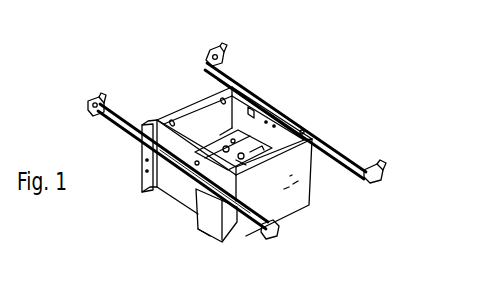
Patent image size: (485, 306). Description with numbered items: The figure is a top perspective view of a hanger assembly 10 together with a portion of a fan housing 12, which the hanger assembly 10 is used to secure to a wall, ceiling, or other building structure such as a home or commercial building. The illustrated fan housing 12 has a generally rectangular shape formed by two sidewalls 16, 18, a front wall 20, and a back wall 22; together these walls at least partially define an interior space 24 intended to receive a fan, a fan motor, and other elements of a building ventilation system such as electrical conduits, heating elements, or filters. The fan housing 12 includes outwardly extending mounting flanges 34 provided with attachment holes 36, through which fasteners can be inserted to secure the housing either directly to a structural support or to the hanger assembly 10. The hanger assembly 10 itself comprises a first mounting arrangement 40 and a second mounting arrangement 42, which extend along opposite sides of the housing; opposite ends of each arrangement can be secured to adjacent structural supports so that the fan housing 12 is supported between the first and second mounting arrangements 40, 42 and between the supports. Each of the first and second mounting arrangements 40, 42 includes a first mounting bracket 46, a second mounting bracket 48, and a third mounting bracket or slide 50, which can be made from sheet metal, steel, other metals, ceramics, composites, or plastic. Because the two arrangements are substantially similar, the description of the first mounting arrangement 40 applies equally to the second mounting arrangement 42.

The hanger assembly 10 is at (125, 21).
The fan housing 12 is at (234, 226).
The sidewall 16 is at (171, 160).
The sidewall 18 is at (258, 122).
The front wall 20 is at (298, 197).
The back wall 22 is at (197, 117).
The interior space 24 is at (304, 101).
The mounting flange 34 is at (141, 161).
The attachment hole 36 is at (147, 128).
The first mounting arrangement 40 is at (227, 42).
The second mounting arrangement 42 is at (92, 90).
The first mounting bracket 46 is at (118, 130).
The second mounting bracket 48 is at (340, 152).
The third mounting bracket or slide 50 is at (304, 130).